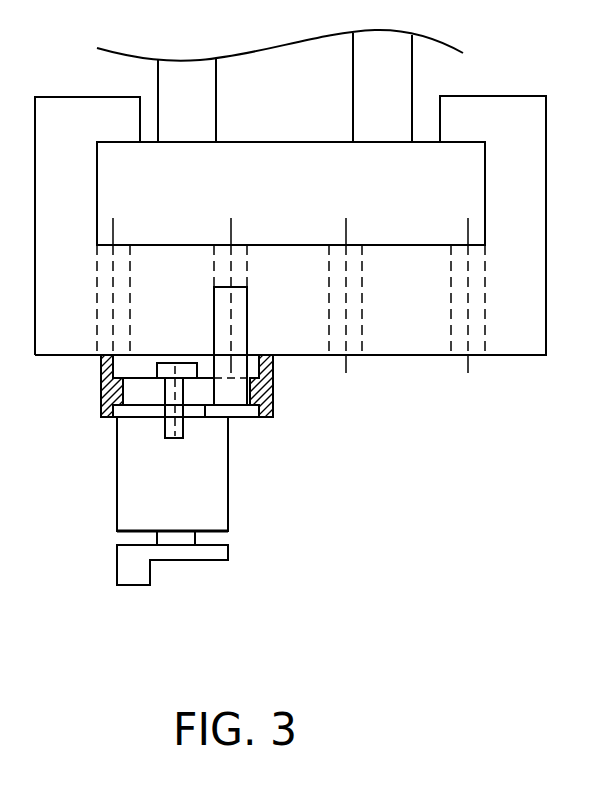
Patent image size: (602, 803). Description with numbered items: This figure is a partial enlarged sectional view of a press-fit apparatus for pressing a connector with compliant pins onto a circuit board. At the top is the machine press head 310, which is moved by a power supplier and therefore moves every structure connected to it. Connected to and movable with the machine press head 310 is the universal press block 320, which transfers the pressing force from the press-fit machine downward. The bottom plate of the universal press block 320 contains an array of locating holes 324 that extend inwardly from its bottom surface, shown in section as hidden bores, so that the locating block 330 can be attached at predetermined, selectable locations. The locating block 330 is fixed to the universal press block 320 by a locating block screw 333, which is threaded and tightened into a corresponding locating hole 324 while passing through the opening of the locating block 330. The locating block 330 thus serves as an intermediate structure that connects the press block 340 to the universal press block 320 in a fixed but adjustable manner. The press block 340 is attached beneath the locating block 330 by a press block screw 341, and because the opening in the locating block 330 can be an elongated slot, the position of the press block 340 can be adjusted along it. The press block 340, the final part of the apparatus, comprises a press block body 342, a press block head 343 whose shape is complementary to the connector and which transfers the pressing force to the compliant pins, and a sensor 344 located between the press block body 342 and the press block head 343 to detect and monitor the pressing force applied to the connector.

The machine press head 310 is at (307, 207).
The universal press block 320 is at (546, 158).
The locating holes 324 is at (353, 338).
The locating block 330 is at (273, 405).
The locating block screw 333 is at (247, 336).
The press block 340 is at (161, 517).
The press block screw 341 is at (183, 437).
The press block body 342 is at (228, 497).
The press block head 343 is at (182, 553).
The sensor 344 is at (197, 536).